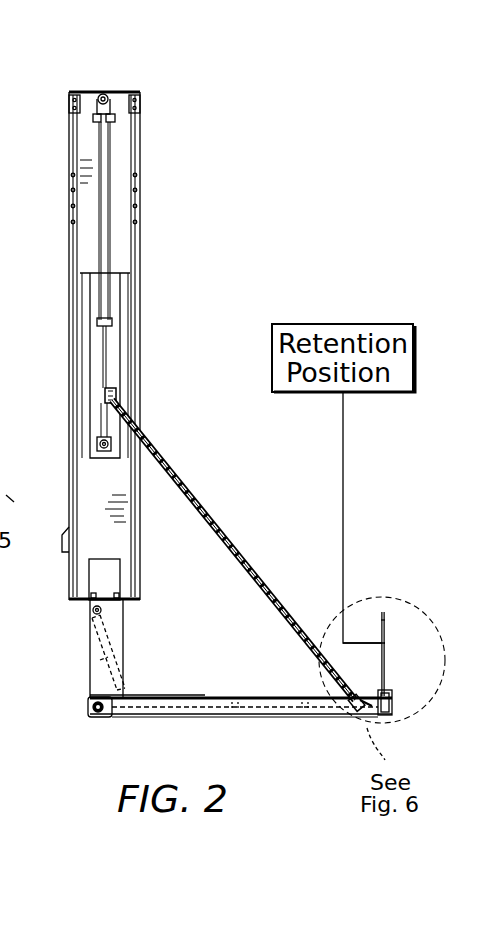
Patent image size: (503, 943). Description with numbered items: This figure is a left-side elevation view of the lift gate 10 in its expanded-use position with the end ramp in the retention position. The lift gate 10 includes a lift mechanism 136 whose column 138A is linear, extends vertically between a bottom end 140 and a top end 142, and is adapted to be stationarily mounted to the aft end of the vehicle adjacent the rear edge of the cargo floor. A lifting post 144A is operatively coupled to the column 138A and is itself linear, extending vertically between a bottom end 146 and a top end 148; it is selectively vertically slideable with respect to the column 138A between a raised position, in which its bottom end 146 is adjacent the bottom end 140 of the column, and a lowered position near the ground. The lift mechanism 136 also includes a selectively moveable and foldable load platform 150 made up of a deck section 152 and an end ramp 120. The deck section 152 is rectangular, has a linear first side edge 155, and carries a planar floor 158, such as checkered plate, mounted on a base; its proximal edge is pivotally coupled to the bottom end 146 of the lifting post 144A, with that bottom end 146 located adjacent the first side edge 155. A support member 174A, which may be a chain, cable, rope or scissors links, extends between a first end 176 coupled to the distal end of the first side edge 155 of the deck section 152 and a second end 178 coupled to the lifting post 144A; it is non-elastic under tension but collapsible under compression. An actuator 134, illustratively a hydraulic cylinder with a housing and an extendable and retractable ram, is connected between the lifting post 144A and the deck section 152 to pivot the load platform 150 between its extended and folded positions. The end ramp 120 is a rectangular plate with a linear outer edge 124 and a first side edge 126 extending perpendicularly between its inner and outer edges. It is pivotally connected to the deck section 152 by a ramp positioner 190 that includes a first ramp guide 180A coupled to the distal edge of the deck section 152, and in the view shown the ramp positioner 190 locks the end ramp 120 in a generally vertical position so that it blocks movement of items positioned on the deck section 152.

The lift gate 10 is at (373, 174).
The lift mechanism 136 is at (184, 343).
The column 138A is at (140, 282).
The top end 142 is at (123, 92).
The top end 148 is at (95, 273).
The second end 178 is at (118, 398).
The support member 174A is at (233, 550).
The first end 176 is at (342, 668).
The outer edge 124 is at (383, 612).
The first side edge 126 is at (388, 636).
The load platform 150 is at (362, 595).
The end ramp 120 is at (412, 627).
The bottom end 140 is at (125, 601).
The lifting post 144A is at (88, 662).
The actuator 134 is at (117, 662).
The deck section 152 is at (241, 664).
The floor 158 is at (245, 675).
The first side edge 155 is at (255, 703).
The bottom end 146 is at (88, 708).
The first ramp guide 180A is at (416, 733).
The ramp positioner 190 is at (331, 745).